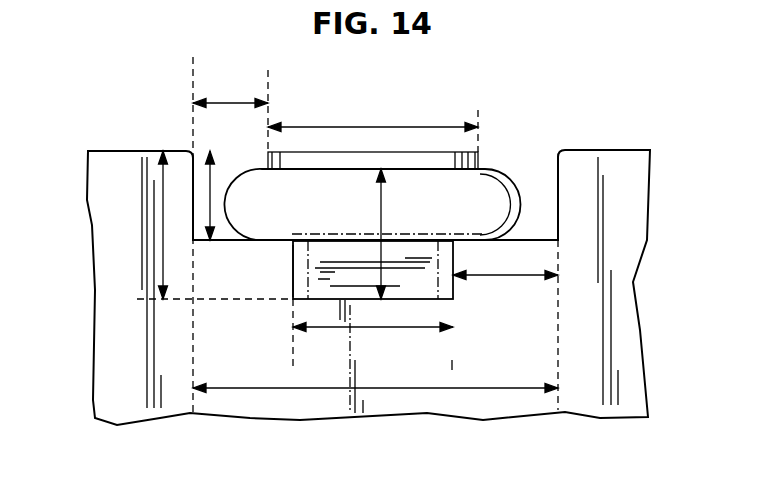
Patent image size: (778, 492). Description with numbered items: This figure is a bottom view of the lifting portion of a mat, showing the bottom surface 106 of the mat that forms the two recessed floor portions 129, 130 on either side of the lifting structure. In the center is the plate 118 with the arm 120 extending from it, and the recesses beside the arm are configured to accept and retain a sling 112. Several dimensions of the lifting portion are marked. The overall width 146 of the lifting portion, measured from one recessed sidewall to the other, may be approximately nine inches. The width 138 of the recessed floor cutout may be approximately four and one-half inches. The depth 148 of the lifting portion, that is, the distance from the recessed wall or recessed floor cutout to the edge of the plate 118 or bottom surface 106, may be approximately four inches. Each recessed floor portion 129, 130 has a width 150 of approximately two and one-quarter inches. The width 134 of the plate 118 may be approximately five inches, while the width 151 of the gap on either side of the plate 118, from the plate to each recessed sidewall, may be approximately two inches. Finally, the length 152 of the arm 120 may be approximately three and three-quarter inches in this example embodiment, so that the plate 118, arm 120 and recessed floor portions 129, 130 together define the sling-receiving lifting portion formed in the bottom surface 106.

The bottom surface 106 is at (622, 350).
The sling 112 is at (495, 197).
The plate 118 is at (420, 157).
The arm 120 is at (340, 260).
The recessed floor portion 129 is at (280, 262).
The recessed floor portion 130 is at (530, 238).
The width of the plate 134 is at (310, 125).
The width of the recessed floor cutout 138 is at (380, 330).
The width of the lifting portion 146 is at (410, 388).
The depth of the lifting portion 148 is at (160, 213).
The width of each recessed floor portion 150 is at (517, 277).
The width of the gap 151 is at (225, 102).
The length of the arm 152 is at (490, 170).